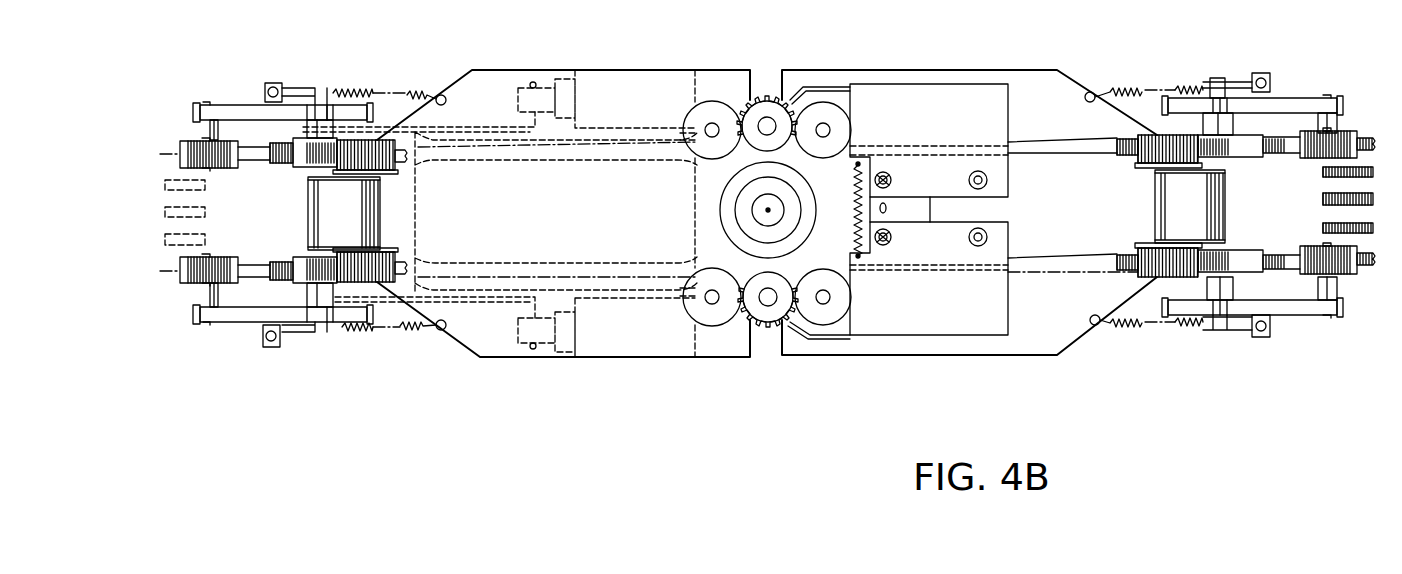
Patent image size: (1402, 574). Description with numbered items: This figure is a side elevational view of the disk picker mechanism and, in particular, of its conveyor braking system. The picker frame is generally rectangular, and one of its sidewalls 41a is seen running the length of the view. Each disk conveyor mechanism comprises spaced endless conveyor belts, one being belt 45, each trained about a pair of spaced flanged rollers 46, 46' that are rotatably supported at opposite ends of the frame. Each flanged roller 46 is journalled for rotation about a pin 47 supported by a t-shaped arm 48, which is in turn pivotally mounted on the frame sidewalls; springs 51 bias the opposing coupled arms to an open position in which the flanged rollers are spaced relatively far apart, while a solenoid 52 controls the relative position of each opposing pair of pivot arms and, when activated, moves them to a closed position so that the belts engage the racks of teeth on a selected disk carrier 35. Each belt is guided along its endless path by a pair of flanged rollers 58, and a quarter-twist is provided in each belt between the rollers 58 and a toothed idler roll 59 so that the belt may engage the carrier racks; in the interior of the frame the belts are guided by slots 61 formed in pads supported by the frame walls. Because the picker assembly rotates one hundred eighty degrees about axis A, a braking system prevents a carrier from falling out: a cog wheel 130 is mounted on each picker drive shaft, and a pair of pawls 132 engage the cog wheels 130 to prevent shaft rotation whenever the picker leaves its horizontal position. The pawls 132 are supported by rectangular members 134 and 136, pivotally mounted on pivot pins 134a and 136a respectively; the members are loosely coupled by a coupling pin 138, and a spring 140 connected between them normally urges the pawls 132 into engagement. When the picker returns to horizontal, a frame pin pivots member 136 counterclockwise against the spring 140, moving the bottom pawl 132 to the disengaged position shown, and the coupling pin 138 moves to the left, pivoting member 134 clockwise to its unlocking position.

The sidewall 41a is at (1045, 125).
The pawl 132 is at (808, 90).
The flanged roller 58 is at (709, 108).
The cog wheel 130 is at (763, 97).
The axis A is at (762, 210).
The solenoid 52 is at (609, 90).
The slot 61 is at (433, 150).
The toothed idler roll 59 is at (397, 251).
The flanged roller 46' is at (222, 212).
The flanged roller 46 is at (1308, 201).
The conveyor belt 45 is at (1115, 143).
The disk carrier 35 is at (205, 233).
The pin 47 is at (213, 127).
The t-shaped arm 48 is at (229, 103).
The spring 51 is at (425, 96).
The rectangular member 134 is at (937, 132).
The pivot pin 134a is at (895, 181).
The rectangular member 136 is at (938, 321).
The pivot pin 136a is at (895, 233).
The coupling pin 138 is at (887, 208).
The spring 140 is at (849, 213).